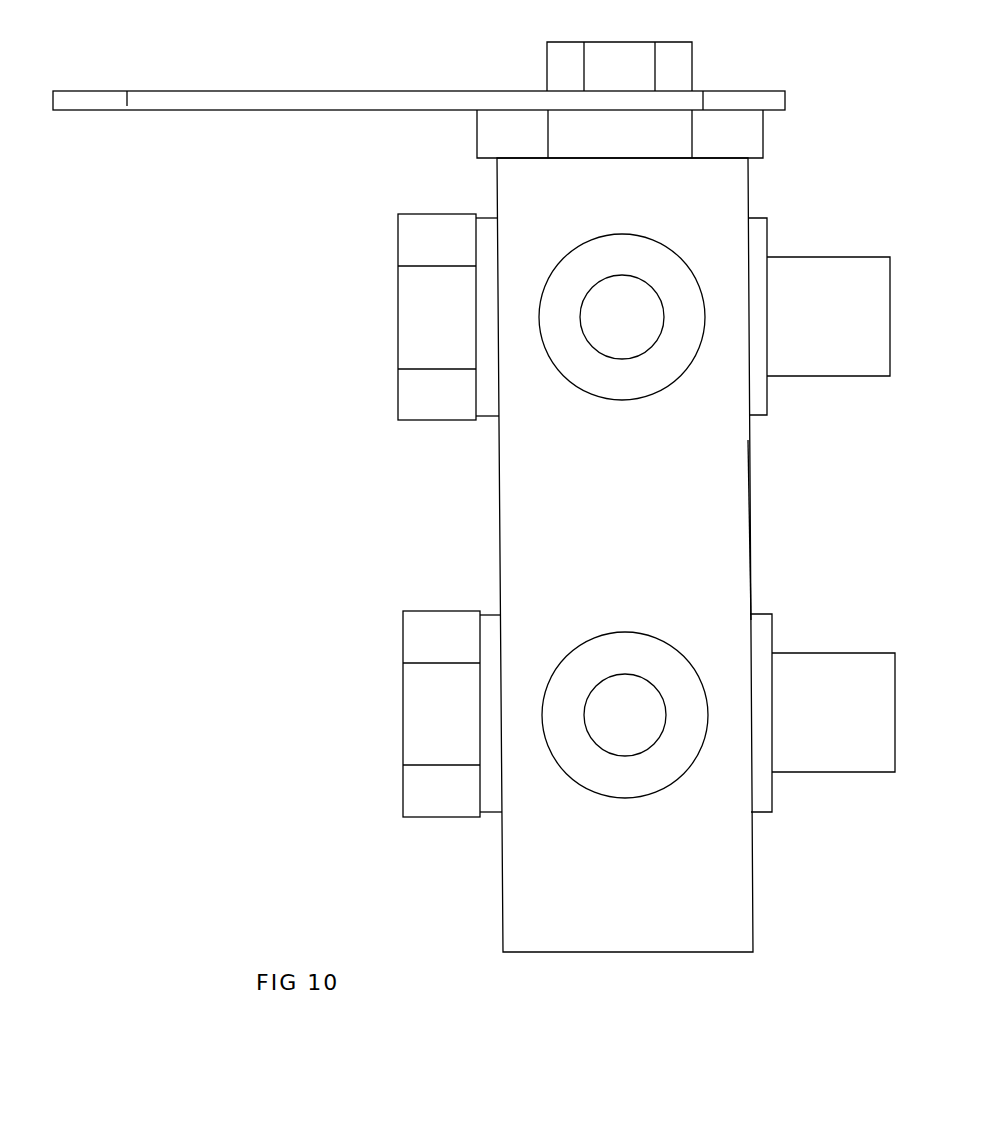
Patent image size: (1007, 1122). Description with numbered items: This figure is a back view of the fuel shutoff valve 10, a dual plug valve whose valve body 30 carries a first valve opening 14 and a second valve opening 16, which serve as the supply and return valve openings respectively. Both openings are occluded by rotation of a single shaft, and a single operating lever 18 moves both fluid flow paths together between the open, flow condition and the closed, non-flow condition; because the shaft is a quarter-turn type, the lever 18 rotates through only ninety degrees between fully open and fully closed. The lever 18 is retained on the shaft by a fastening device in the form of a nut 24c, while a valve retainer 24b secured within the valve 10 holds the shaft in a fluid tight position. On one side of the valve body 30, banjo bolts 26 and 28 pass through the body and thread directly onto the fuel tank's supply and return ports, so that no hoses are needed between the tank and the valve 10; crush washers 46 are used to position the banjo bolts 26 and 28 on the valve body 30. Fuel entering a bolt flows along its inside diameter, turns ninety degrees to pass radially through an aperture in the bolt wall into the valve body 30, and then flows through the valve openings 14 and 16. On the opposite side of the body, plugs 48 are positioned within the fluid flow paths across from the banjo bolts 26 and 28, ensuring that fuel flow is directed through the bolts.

The fuel shutoff valve 10 is at (735, 512).
The first valve opening 14 is at (667, 385).
The second valve opening 16 is at (643, 635).
The operating lever 18 is at (745, 100).
The valve retainer 24b is at (758, 137).
The nut 24c is at (680, 69).
The banjo bolt 26 is at (792, 265).
The banjo bolt 28 is at (802, 665).
The valve body 30 is at (740, 549).
The crush washers 46 is at (757, 233).
The plugs 48 is at (490, 249).